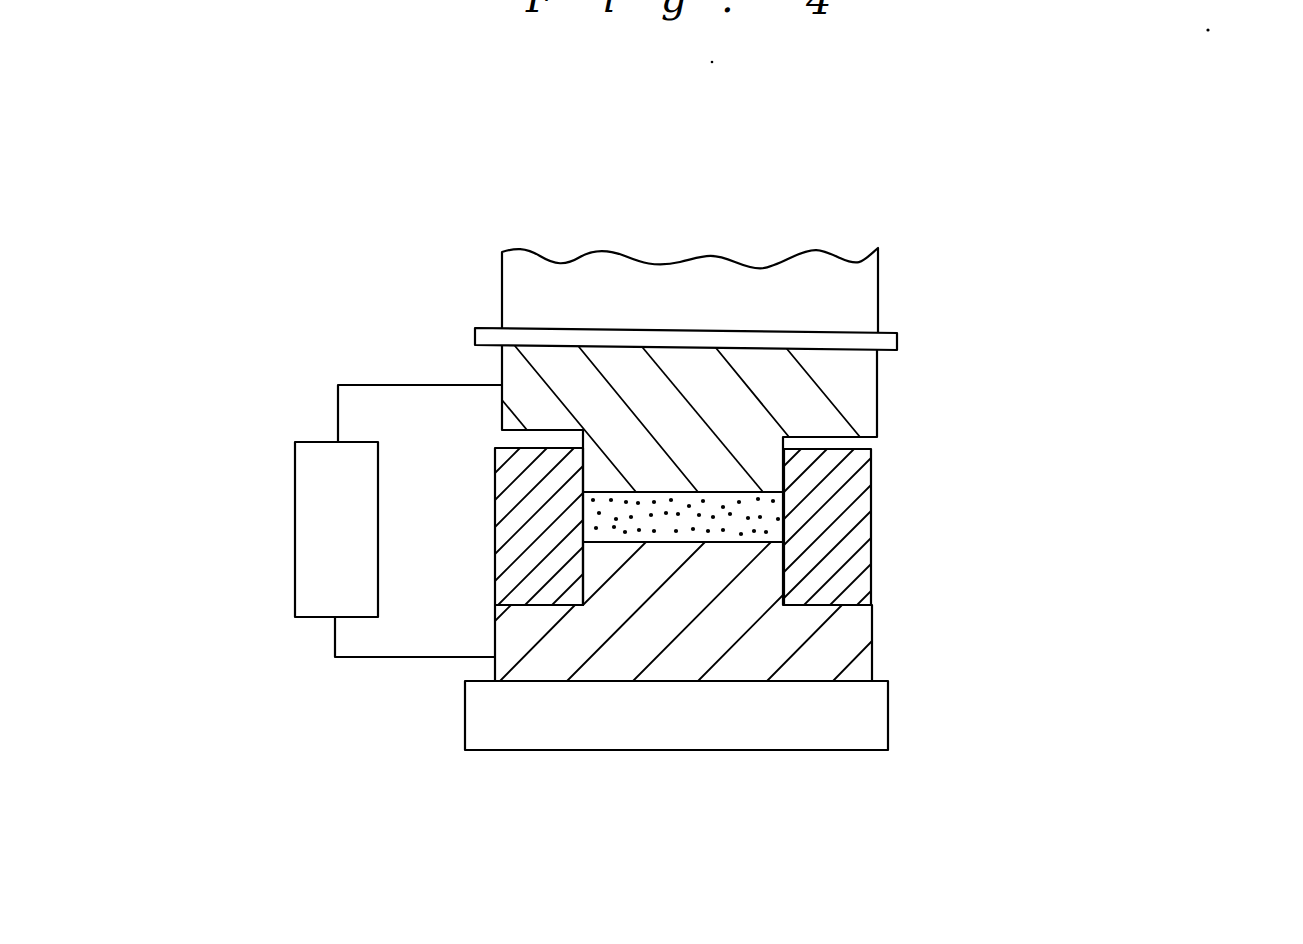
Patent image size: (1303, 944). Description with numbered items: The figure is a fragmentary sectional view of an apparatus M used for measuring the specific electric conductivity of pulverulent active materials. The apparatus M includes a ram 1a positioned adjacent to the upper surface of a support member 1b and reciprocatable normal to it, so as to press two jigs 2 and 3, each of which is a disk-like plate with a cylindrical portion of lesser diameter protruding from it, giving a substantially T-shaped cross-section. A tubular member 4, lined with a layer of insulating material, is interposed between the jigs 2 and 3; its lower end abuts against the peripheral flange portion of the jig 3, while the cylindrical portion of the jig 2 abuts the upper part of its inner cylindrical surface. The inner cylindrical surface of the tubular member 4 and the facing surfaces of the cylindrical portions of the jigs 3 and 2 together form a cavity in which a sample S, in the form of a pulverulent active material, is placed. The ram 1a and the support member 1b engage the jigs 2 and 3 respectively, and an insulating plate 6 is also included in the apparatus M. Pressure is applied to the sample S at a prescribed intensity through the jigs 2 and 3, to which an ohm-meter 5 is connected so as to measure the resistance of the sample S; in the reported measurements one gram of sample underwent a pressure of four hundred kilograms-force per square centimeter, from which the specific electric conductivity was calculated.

The apparatus for measuring specific electric conductivity M is at (541, 121).
The ram 1a is at (857, 303).
The support member 1b is at (863, 725).
The jig 2 is at (865, 413).
The jig 3 is at (853, 635).
The tubular member 4 is at (862, 535).
The ohm-meter 5 is at (322, 557).
The insulating plate 6 is at (896, 348).
The sample S is at (680, 523).